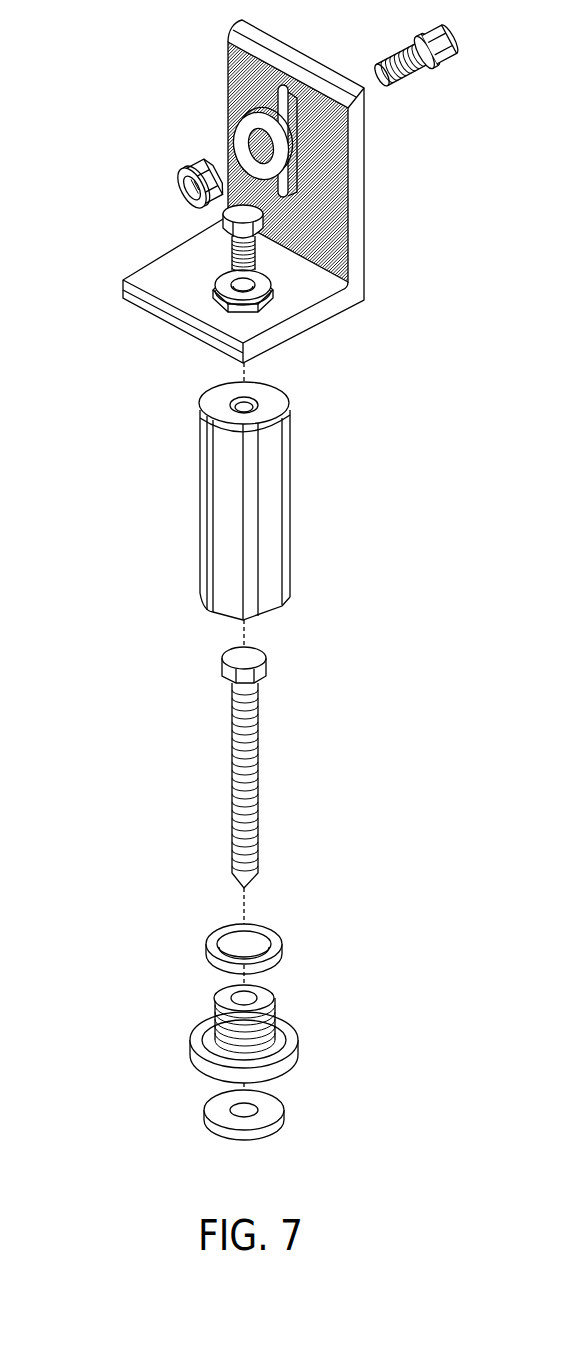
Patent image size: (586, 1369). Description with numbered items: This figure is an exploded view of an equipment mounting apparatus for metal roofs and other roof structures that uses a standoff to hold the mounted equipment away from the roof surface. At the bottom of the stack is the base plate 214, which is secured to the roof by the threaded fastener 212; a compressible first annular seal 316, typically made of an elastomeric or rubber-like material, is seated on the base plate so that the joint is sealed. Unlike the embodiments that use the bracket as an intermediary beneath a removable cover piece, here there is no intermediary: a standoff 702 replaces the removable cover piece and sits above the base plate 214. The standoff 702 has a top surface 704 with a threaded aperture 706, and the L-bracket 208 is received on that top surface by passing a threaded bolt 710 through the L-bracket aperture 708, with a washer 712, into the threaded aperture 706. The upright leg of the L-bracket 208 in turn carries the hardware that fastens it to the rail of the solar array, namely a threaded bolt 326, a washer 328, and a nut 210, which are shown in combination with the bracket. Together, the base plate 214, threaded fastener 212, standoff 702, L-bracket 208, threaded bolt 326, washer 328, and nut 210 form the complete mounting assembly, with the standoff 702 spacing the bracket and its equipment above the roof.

The L-bracket 208 is at (365, 238).
The nut 210 is at (172, 176).
The threaded fastener 212 is at (260, 757).
The base plate 214 is at (192, 1037).
The first annular seal 316 is at (287, 947).
The threaded bolt 326 is at (460, 57).
The washer 328 is at (228, 128).
The standoff 702 is at (252, 481).
The top surface 704 is at (214, 406).
The threaded aperture 706 is at (238, 402).
The L-bracket aperture 708 is at (215, 290).
The threaded bolt 710 is at (230, 252).
The washer 712 is at (272, 300).